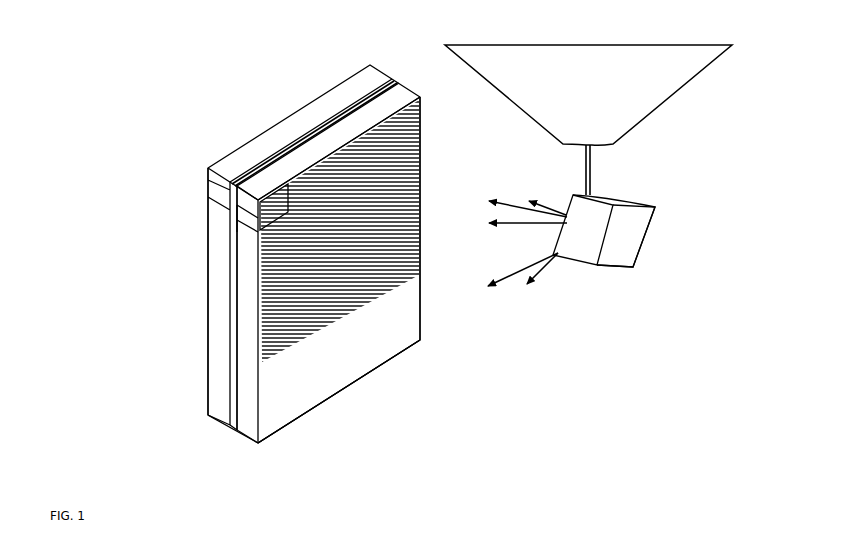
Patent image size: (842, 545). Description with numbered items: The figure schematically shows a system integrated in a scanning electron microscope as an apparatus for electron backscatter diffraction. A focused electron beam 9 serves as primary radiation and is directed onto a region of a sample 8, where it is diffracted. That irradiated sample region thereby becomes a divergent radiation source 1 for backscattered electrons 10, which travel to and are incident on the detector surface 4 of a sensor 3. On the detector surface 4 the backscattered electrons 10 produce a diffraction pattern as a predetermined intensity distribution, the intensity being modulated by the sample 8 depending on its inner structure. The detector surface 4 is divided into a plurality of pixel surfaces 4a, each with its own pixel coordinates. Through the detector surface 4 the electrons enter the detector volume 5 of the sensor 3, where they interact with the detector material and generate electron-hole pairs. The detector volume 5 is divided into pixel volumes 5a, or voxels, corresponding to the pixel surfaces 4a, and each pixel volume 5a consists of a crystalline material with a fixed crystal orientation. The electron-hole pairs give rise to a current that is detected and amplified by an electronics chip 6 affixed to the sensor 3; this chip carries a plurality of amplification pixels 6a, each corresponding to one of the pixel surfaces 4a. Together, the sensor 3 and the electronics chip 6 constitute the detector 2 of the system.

The divergent radiation source 1 is at (657, 48).
The detector 2 is at (221, 93).
The sensor 3 is at (339, 394).
The detector surface 4 is at (270, 277).
The pixel surfaces 4a is at (270, 208).
The detector volume 5 is at (243, 388).
The pixel volumes 5a is at (243, 209).
The electronics chip 6 is at (368, 79).
The amplification pixels 6a is at (222, 173).
The sample 8 is at (634, 243).
The electron beam 9 is at (593, 170).
The backscattered electrons 10 is at (556, 252).